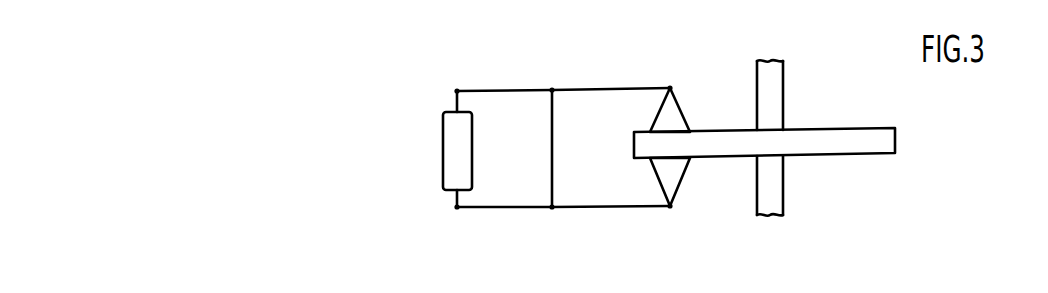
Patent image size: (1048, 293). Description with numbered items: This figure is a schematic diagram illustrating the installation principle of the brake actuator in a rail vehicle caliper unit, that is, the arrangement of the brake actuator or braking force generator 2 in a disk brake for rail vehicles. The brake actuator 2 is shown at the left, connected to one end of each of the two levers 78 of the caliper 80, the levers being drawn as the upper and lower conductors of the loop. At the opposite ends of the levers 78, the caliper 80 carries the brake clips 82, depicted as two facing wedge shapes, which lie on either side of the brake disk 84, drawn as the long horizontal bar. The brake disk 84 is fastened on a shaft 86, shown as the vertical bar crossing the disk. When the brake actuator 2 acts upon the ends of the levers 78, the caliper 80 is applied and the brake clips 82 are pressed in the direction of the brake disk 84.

The brake actuator 2 is at (454, 127).
The levers 78 is at (502, 90).
The caliper 80 is at (606, 88).
The brake clips 82 is at (672, 110).
The brake disk 84 is at (727, 140).
The shaft 86 is at (775, 110).